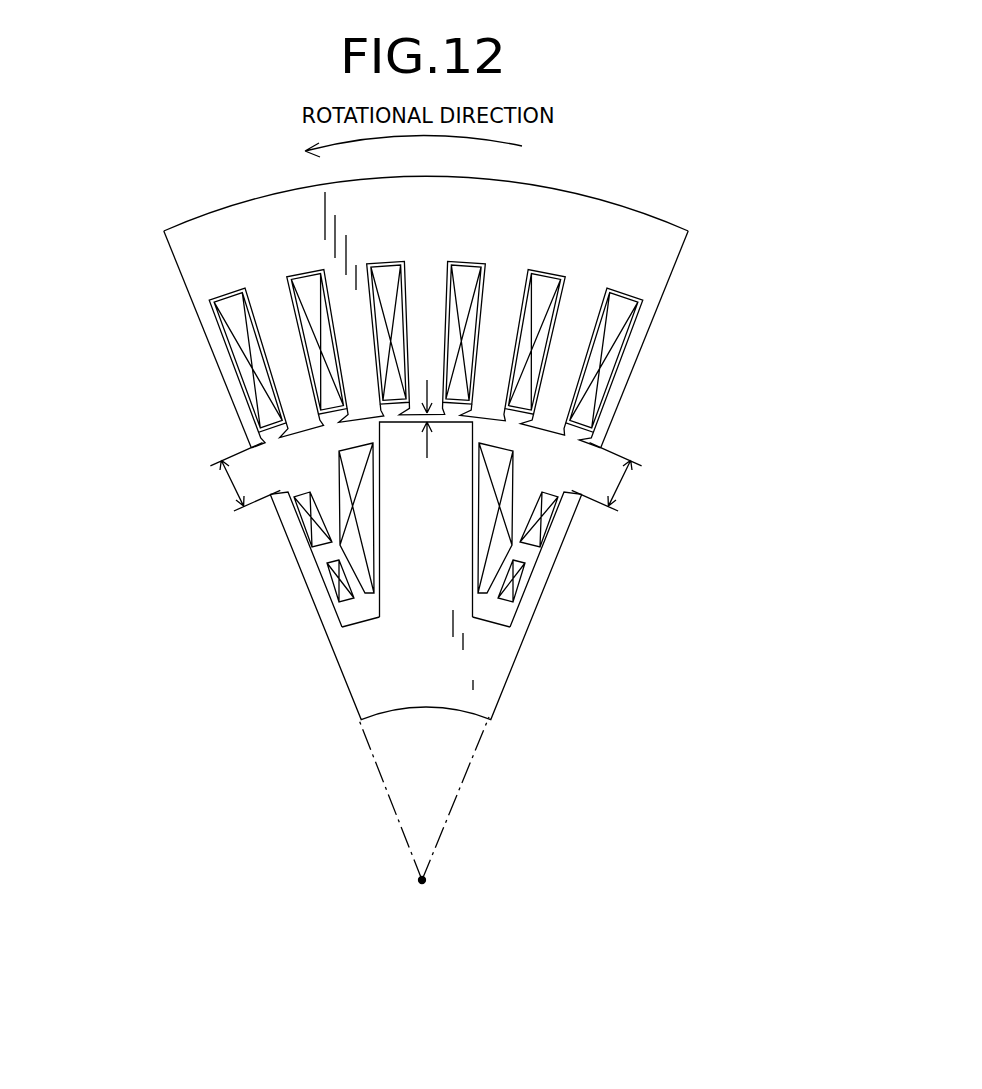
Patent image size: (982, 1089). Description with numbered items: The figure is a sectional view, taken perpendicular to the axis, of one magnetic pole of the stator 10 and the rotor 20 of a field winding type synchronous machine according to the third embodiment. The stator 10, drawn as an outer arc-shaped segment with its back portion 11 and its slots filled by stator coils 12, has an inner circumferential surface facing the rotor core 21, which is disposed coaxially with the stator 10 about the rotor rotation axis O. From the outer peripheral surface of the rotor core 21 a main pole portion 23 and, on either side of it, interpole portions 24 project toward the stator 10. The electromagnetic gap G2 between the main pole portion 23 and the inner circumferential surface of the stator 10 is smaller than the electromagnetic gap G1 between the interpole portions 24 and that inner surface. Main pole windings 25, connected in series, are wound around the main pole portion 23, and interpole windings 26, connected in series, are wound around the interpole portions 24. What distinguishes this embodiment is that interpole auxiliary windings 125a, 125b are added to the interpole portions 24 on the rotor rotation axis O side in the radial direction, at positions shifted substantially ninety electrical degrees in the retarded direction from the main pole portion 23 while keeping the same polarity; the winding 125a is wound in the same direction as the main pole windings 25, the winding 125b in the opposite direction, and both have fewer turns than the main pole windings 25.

The stator 10 is at (433, 312).
The stator core back yoke 11 is at (207, 269).
The stator coil 12 is at (255, 350).
The rotor 20 is at (425, 595).
The rotor core 21 is at (375, 665).
The main pole portion 23 is at (425, 560).
The interpole portion 24 is at (305, 555).
The main pole winding 25 is at (367, 590).
The interpole winding 26 is at (300, 516).
The interpole auxiliary winding 125a is at (517, 580).
The interpole auxiliary winding 125b is at (335, 580).
The electromagnetic gap G1 is at (423, 477).
The electromagnetic gap G2 is at (425, 433).
The rotor rotation axis O is at (424, 821).